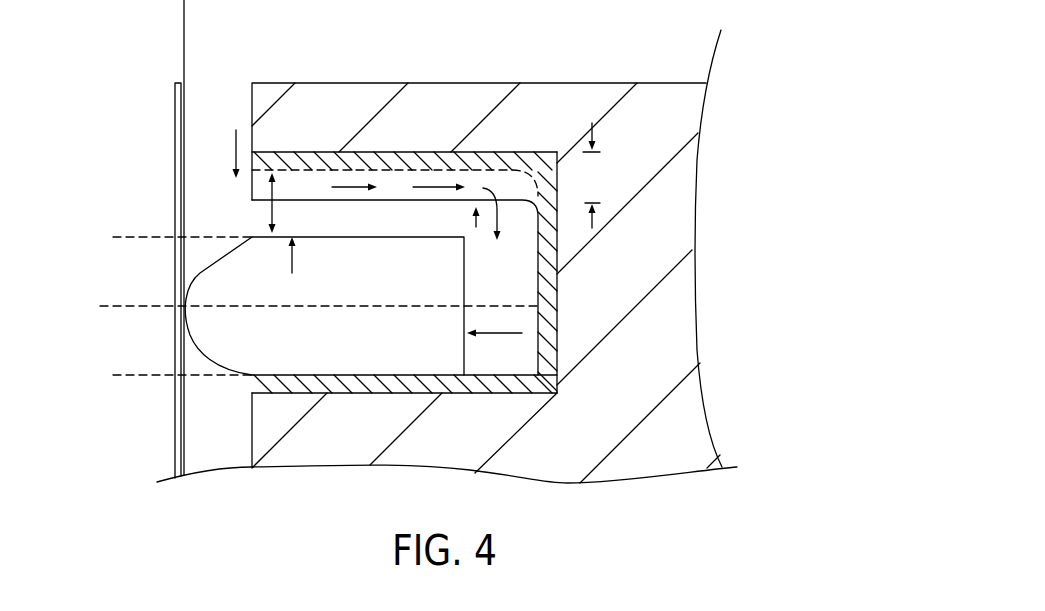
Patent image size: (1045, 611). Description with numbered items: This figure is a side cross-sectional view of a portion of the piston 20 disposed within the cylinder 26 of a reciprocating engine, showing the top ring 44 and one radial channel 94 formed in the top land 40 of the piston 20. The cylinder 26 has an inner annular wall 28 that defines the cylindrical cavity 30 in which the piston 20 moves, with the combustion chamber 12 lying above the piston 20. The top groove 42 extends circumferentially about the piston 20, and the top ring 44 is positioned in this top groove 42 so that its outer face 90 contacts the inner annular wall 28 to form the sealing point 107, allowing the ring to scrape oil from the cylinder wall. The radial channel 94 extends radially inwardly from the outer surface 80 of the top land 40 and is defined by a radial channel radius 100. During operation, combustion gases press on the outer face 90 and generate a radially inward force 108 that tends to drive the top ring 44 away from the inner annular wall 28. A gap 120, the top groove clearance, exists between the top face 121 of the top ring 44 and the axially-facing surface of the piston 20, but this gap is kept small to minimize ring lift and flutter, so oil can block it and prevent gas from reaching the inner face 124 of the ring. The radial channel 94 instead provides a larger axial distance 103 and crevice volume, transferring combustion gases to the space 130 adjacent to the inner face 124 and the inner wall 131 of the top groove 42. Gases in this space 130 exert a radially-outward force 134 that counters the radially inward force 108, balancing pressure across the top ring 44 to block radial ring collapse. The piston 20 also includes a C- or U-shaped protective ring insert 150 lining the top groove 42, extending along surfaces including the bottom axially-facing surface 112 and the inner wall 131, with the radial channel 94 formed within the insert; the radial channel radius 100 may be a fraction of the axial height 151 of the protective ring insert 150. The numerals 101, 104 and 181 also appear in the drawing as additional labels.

The combustion chamber 12 is at (497, 66).
The piston 20 is at (746, 80).
The cylinder 26 is at (176, 118).
The inner annular wall 28 is at (179, 84).
The cylindrical cavity 30 is at (227, 124).
The top land 40 is at (553, 83).
The top groove 42 is at (237, 220).
The top ring 44 is at (233, 338).
The outer surface 80 is at (252, 100).
The outer face 90 is at (198, 278).
The radial channel 94 is at (511, 182).
The radial channel radius 100 is at (477, 167).
The channel inner surface 101 is at (418, 203).
The axial distance 103 is at (252, 197).
The flow diverting region 104 is at (292, 197).
The sealing point 107 is at (183, 318).
The radially inward force 108 is at (217, 257).
The bottom axially-facing surface 112 is at (327, 375).
The gap 120 is at (367, 232).
The top face 121 is at (302, 237).
The inner face 124 is at (466, 358).
The space 130 is at (517, 291).
The inner wall 131 is at (540, 250).
The radially-outward force 134 is at (541, 378).
The protective ring insert 150 is at (557, 306).
The axial height 151 is at (596, 145).
The centerline / axis 181 is at (247, 306).